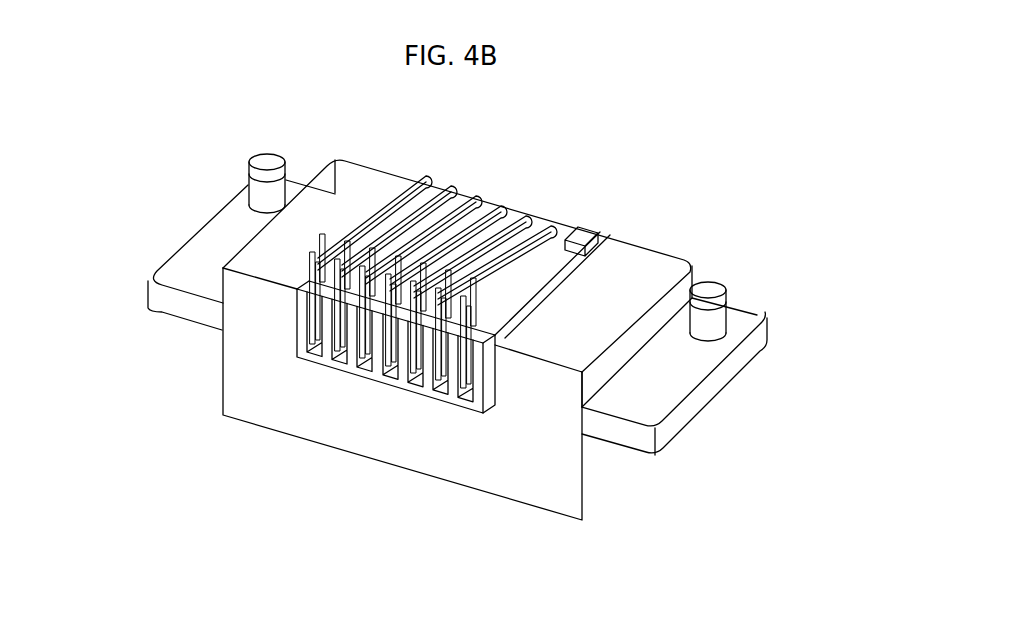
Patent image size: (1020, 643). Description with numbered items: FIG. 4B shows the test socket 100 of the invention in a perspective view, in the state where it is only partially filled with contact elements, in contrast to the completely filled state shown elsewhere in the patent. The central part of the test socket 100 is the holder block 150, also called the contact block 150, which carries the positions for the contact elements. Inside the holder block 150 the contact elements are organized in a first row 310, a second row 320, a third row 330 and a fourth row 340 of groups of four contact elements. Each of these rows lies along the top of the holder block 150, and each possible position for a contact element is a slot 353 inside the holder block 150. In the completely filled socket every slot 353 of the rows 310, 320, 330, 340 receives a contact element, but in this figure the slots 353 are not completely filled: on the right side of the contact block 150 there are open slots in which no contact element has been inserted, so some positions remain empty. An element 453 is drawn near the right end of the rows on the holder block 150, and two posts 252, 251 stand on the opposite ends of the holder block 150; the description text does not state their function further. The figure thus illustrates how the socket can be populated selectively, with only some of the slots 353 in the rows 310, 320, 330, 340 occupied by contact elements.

The connector assembly 100 is at (176, 130).
The holder block 150 is at (212, 244).
The mounting post 252 is at (264, 154).
The mounting post 251 is at (711, 284).
The first row 310 is at (590, 216).
The second row 320 is at (472, 221).
The third row 330 is at (518, 224).
The fourth row 340 is at (550, 228).
The retention tab 453 is at (536, 268).
The slot 353 is at (455, 395).